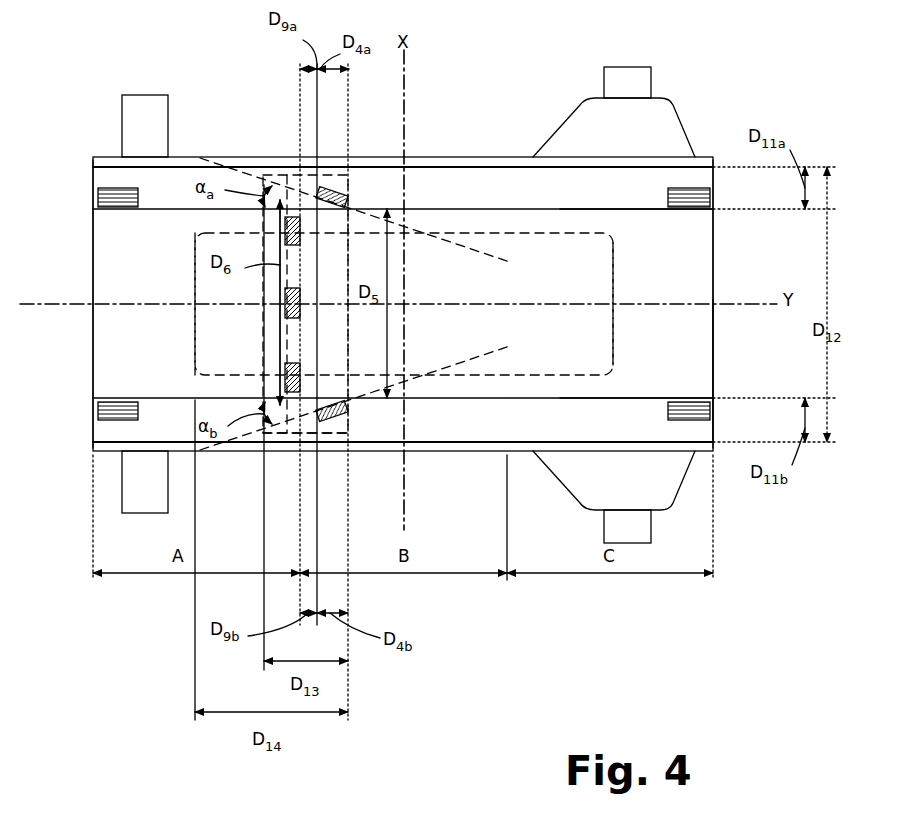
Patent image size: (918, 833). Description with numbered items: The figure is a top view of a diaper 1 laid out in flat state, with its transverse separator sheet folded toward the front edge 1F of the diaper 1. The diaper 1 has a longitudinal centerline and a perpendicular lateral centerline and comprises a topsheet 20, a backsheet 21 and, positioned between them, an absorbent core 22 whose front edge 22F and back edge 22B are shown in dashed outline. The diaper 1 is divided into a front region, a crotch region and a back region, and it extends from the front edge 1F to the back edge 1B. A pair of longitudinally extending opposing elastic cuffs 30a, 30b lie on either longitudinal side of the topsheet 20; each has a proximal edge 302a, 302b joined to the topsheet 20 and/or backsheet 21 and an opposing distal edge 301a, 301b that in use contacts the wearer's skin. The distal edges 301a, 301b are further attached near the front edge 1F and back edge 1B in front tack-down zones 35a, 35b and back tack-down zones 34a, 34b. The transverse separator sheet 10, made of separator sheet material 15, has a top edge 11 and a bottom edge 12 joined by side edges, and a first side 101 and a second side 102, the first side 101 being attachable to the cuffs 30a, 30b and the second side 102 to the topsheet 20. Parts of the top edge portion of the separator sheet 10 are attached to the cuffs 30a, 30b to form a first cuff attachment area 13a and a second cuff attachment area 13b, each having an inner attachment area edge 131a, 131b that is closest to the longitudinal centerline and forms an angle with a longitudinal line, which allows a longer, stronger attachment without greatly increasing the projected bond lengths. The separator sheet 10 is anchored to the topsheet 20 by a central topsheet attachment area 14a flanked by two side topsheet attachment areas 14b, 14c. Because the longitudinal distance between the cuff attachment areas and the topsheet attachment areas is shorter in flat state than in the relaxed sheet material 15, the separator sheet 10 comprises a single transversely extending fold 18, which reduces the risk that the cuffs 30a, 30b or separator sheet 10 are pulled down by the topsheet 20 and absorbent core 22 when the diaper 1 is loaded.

The diaper 1 is at (62, 118).
The front edge 1F is at (93, 245).
The back edge 1B is at (713, 270).
The transverse separator sheet 10 is at (263, 175).
The top edge 11 is at (360, 208).
The bottom edge 12 is at (285, 245).
The first cuff attachment area 13a is at (345, 190).
The second cuff attachment area 13b is at (345, 418).
The central topsheet attachment area 14a is at (285, 310).
The side topsheet attachment area 14b is at (285, 232).
The side topsheet attachment area 14c is at (285, 385).
The separator sheet material 15 is at (288, 433).
The transversely extending fold 18 is at (285, 292).
The topsheet 20 is at (431, 304).
The backsheet 21 is at (713, 355).
The absorbent core 22 is at (510, 233).
The front edge of the absorbent core 22F is at (195, 255).
The back edge of the absorbent core 22B is at (613, 330).
The first elastic cuff 30a is at (456, 185).
The second elastic cuff 30b is at (446, 432).
The back tack-down zone 34a is at (710, 197).
The back tack-down zone 34b is at (710, 411).
The front tack-down zone 35a is at (98, 197).
The front tack-down zone 35b is at (98, 410).
The first side 101 is at (345, 310).
The second side 102 is at (300, 362).
The inner attachment area edge 131a is at (350, 235).
The inner attachment area edge 131b is at (350, 372).
The distal edge 301a is at (600, 210).
The distal edge 301b is at (600, 397).
The proximal edge 302a is at (560, 168).
The proximal edge 302b is at (560, 398).